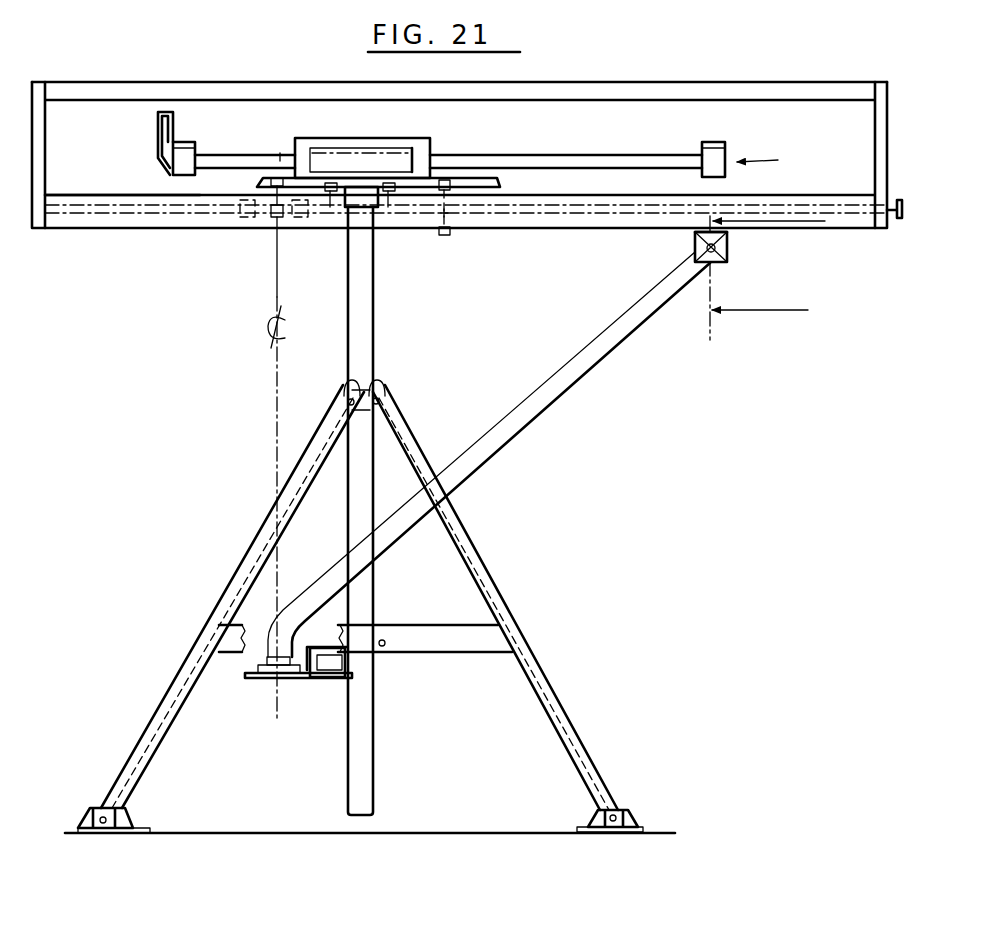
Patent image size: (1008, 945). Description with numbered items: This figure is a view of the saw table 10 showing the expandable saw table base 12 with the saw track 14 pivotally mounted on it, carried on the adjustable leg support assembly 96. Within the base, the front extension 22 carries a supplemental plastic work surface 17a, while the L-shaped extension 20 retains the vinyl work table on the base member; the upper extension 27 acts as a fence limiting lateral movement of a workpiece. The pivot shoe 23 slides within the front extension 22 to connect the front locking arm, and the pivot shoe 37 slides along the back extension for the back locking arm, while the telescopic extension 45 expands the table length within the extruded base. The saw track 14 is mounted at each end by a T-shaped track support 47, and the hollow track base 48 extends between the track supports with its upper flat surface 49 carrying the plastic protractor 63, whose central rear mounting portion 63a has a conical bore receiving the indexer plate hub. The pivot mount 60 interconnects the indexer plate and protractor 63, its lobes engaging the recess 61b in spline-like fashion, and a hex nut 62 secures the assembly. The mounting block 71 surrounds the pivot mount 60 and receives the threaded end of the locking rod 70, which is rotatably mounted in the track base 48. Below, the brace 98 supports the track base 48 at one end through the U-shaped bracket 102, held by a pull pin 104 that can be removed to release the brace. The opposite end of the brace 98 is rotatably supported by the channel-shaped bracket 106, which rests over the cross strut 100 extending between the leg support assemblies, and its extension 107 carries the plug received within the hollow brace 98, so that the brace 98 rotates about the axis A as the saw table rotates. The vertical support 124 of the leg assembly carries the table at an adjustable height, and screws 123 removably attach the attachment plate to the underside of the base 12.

The saw table 10 is at (578, 72).
The saw track 14 is at (260, 82).
The saw table base 12 is at (443, 145).
The supplemental plastic work surface 17a is at (713, 142).
The L-shaped extension 20 is at (188, 142).
The front extension 22 is at (637, 163).
The pivot shoe 23 is at (783, 244).
The upper extension 27 is at (158, 131).
The pivot shoe 37 is at (180, 177).
The telescopic extension 45 is at (365, 140).
The track support 47 is at (45, 162).
The track base 48 is at (65, 230).
The upper flat surface 49 is at (125, 197).
The pivot mount 60 is at (297, 230).
The recess 61b is at (255, 183).
The hex nut 62 is at (289, 141).
The protractor 63 is at (263, 230).
The central rear mounting portion 63a is at (250, 193).
The locking rod 70 is at (900, 223).
The mounting block 71 is at (208, 230).
The leg support assembly 96 is at (493, 570).
The brace 98 is at (568, 390).
The cross strut 100 is at (338, 680).
The U-shaped bracket 102 is at (726, 258).
The pull pin 104 is at (695, 247).
The bracket 106 is at (303, 678).
The extension 107 is at (258, 682).
The screws 123 is at (330, 207).
The vertical support 124 is at (364, 363).
The axis of rotation A is at (277, 410).